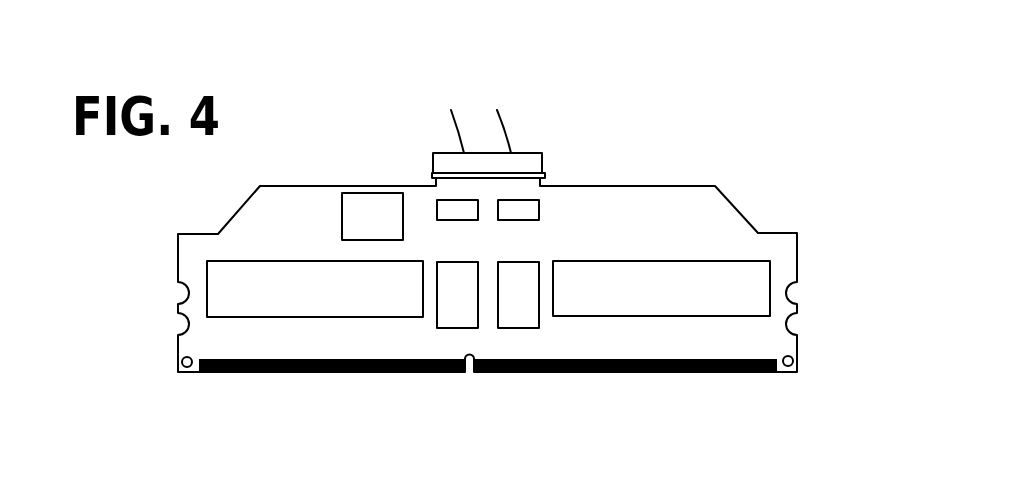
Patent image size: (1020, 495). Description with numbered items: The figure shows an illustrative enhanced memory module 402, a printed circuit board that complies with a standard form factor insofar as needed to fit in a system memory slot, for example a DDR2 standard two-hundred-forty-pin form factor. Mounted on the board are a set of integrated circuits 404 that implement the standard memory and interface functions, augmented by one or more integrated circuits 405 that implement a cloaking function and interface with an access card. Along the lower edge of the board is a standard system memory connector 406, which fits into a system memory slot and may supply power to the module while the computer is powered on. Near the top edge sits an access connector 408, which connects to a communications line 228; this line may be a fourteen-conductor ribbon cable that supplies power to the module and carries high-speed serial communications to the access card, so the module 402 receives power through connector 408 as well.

The communications line 228 is at (503, 133).
The enhanced memory module 402 is at (798, 249).
The integrated circuits 404 is at (478, 270).
The integrated circuits 405 is at (517, 221).
The system memory connector 406 is at (778, 384).
The access connector 408 is at (449, 186).